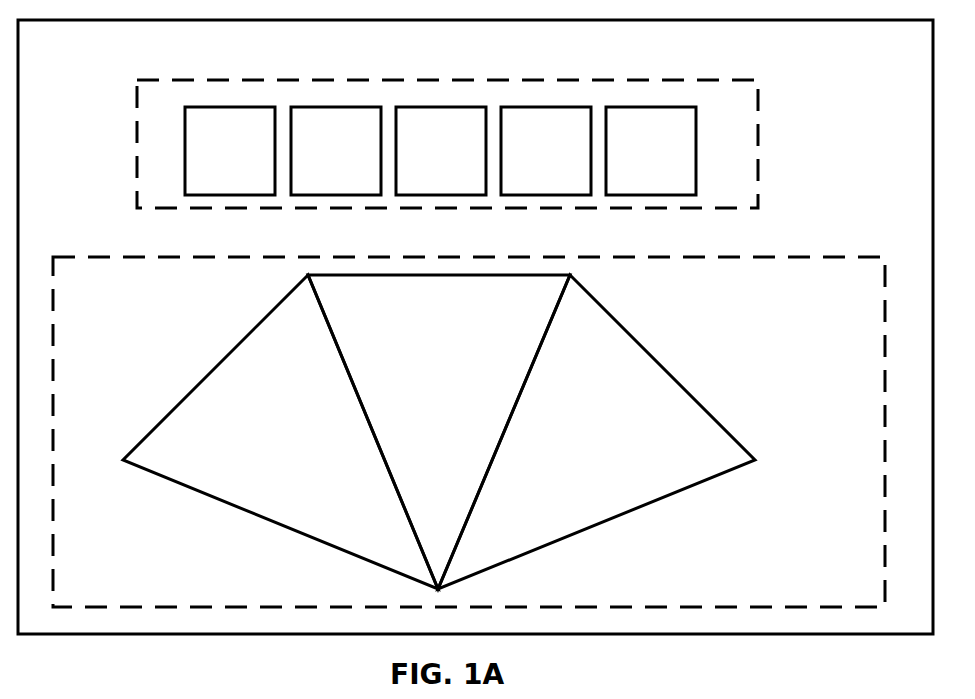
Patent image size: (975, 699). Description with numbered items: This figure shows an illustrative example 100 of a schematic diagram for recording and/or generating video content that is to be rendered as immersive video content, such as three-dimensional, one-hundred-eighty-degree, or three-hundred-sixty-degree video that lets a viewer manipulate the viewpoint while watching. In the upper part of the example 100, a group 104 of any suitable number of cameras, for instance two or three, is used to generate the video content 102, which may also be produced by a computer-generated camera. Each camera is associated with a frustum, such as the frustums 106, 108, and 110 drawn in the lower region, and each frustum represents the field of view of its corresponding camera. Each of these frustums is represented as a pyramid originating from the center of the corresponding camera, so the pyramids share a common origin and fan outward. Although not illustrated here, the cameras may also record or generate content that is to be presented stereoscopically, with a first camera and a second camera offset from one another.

The illustrative example of a schematic diagram 100 is at (900, 57).
The video content 102 is at (738, 160).
The group of cameras 104 is at (758, 283).
The frustum 106 is at (225, 377).
The frustum 108 is at (527, 302).
The right field of view 110 is at (650, 397).